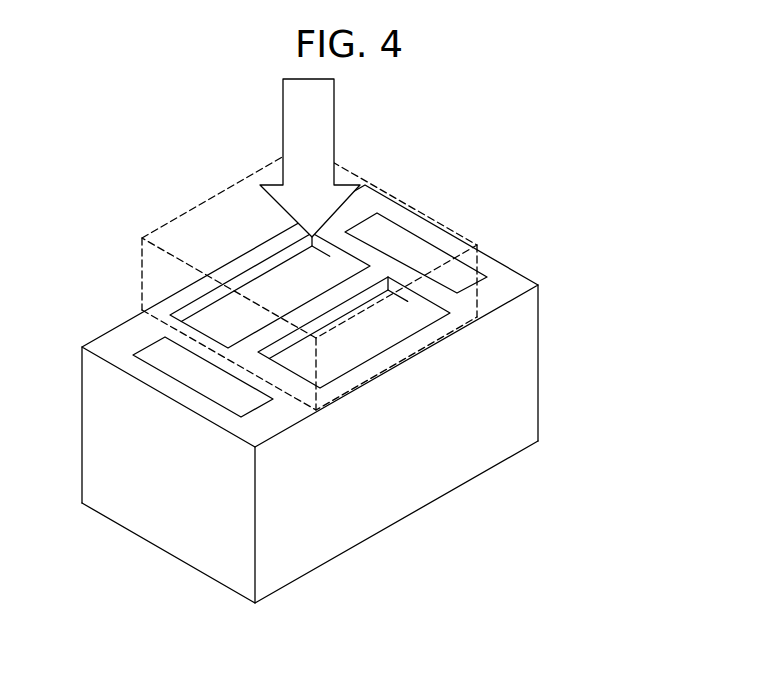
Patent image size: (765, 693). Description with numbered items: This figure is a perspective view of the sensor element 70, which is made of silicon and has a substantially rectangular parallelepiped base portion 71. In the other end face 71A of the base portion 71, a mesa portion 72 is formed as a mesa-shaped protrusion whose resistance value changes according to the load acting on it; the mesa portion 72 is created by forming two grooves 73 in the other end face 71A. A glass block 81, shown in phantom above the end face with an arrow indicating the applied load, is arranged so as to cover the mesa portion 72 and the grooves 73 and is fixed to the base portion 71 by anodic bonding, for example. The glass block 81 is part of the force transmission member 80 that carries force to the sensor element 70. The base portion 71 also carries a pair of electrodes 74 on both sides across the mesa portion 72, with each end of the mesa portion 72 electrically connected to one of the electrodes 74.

The sensor element 70 is at (355, 394).
The base portion 71 is at (334, 394).
The other end face 71A is at (115, 330).
The mesa portion 72 is at (311, 322).
The grooves 73 is at (260, 275).
The electrodes 74 is at (200, 378).
The force transmission member 80 is at (381, 190).
The glass block 81 is at (309, 277).